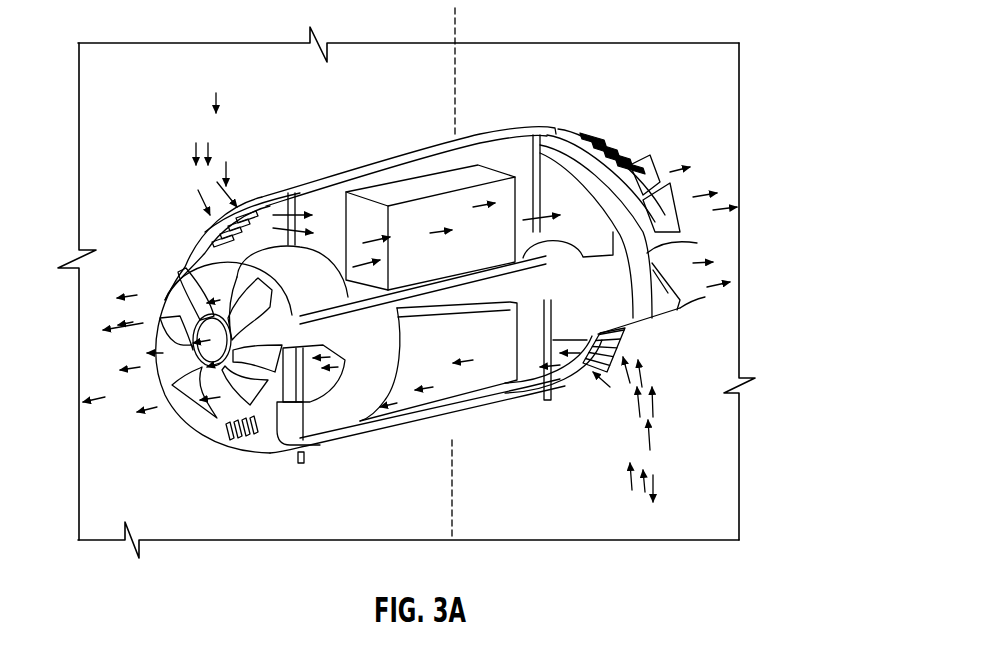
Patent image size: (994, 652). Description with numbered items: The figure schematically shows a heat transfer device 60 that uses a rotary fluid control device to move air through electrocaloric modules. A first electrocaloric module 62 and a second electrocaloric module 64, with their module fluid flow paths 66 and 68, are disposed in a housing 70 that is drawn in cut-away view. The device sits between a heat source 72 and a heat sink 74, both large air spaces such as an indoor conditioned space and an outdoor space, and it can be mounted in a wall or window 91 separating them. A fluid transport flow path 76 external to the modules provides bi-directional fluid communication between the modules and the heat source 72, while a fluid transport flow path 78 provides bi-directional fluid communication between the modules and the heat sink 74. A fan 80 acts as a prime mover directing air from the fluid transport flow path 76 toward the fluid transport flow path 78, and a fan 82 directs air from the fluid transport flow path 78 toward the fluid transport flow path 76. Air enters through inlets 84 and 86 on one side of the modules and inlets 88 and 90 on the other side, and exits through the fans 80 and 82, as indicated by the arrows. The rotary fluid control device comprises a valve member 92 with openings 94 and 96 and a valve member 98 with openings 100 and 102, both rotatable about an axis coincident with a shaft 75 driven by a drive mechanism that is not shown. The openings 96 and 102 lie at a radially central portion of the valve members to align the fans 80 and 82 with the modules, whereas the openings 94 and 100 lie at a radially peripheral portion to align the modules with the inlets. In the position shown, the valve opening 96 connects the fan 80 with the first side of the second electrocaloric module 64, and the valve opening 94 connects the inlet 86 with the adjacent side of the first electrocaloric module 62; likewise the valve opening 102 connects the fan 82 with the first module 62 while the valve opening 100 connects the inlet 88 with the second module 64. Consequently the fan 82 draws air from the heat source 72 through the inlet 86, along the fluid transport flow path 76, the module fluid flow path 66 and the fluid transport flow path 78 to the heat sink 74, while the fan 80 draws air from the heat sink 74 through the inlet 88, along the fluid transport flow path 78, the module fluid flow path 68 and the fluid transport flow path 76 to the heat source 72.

The heat transfer device 60 is at (762, 84).
The first electrocaloric module 62 is at (497, 380).
The second electrocaloric module 64 is at (476, 170).
The module fluid flow path 66 is at (430, 388).
The module fluid flow path 68 is at (440, 232).
The housing 70 is at (442, 152).
The heat source 72 is at (727, 443).
The heat sink 74 is at (97, 191).
The shaft 75 is at (457, 288).
The fluid transport flow path 76 is at (547, 213).
The fluid transport flow path 78 is at (288, 207).
The fan 80 is at (688, 281).
The fan 82 is at (228, 410).
The inlet 84 is at (620, 153).
The inlet 86 is at (580, 365).
The inlet 88 is at (228, 246).
The inlet 90 is at (280, 392).
The wall or window 91 is at (456, 22).
The valve member 92 is at (647, 257).
The valve opening 94 is at (600, 362).
The valve opening 96 is at (583, 222).
The valve member 98 is at (353, 420).
The valve opening 100 is at (334, 210).
The valve opening 102 is at (322, 352).